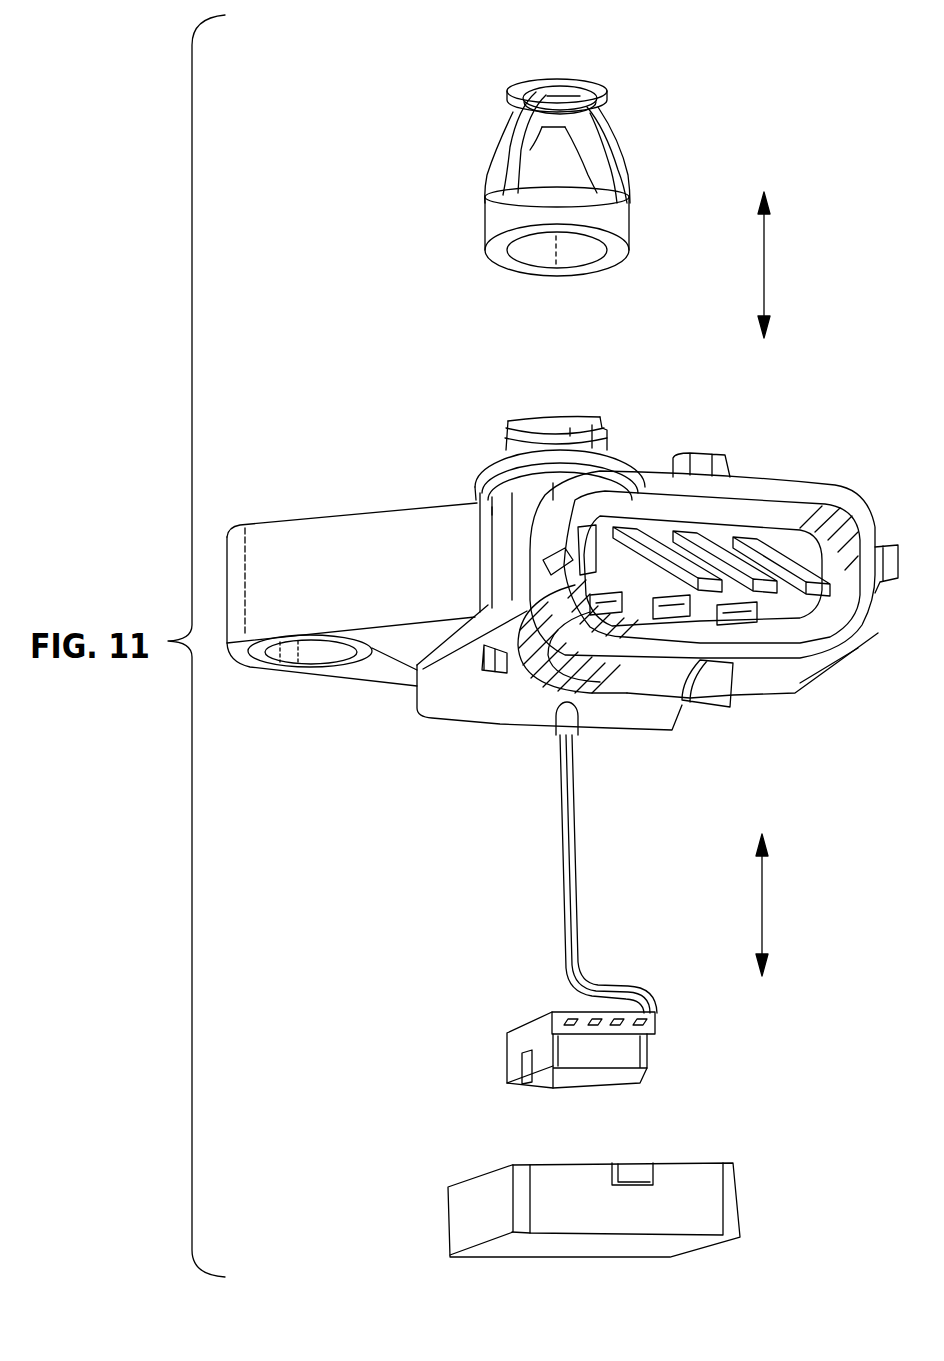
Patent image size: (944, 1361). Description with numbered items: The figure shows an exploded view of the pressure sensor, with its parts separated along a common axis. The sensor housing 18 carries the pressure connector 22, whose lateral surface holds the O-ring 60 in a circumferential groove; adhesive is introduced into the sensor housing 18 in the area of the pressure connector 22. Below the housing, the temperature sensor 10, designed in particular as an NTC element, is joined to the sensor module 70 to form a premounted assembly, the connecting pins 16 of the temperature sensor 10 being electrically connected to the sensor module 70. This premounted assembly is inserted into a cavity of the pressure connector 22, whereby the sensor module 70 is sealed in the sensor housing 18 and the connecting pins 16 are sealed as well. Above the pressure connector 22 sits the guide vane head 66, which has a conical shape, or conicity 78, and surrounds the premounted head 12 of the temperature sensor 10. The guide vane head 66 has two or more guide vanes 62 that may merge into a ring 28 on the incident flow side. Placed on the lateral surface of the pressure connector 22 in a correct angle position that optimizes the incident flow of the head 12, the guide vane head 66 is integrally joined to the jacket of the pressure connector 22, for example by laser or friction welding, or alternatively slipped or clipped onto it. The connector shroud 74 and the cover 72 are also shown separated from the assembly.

The temperature sensor 10 is at (562, 679).
The head 12 is at (556, 718).
The connecting pins 16 is at (575, 958).
The sensor housing 18 is at (766, 676).
The pressure connector 22 is at (542, 428).
The ring 28 is at (556, 84).
The O-ring 60 is at (500, 468).
The guide vanes 62 is at (505, 166).
The guide vane head 66 is at (548, 147).
The sensor module 70 is at (620, 1053).
The cover 72 is at (695, 1195).
The connector shroud 74 is at (775, 492).
The conicity 78 is at (442, 112).